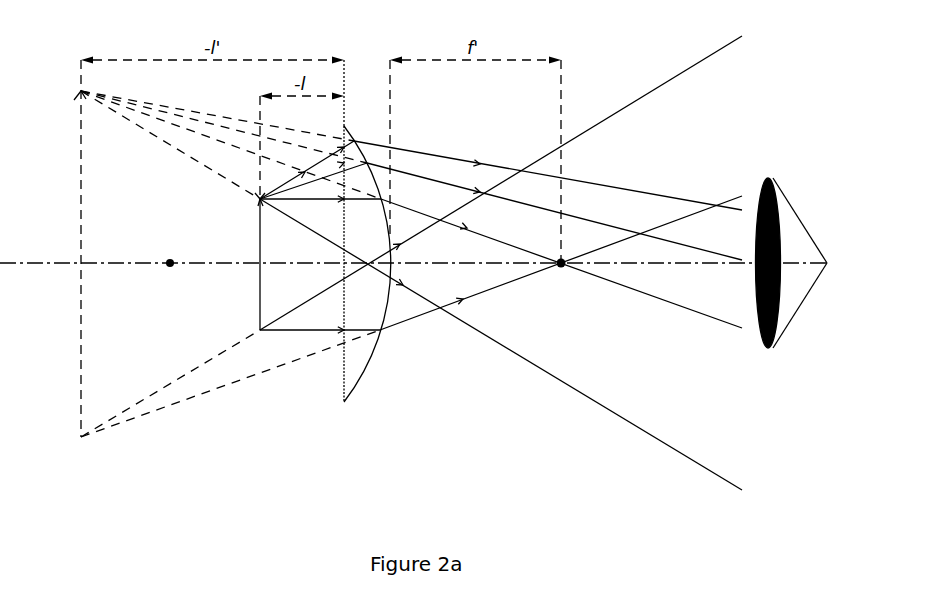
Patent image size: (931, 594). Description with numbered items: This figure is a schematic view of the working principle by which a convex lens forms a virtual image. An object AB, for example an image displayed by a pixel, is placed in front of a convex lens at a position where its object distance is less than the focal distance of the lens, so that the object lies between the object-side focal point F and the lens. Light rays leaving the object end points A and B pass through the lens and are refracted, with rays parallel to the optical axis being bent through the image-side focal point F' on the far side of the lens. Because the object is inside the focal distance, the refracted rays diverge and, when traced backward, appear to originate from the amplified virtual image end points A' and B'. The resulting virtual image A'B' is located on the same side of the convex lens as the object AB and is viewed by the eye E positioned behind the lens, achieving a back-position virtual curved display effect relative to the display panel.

The object end point A is at (487, 315).
The object end point B is at (487, 185).
The virtual image end point A' is at (213, 143).
The virtual image end point B' is at (212, 388).
The focal point F is at (169, 278).
The image-side focal point F' is at (559, 278).
The eye E is at (792, 246).